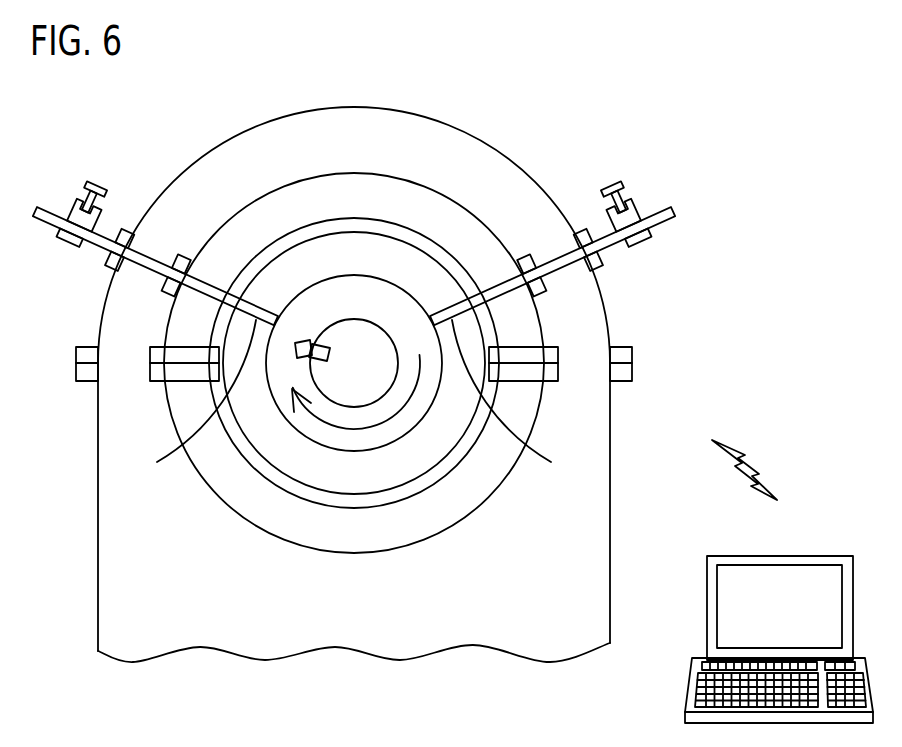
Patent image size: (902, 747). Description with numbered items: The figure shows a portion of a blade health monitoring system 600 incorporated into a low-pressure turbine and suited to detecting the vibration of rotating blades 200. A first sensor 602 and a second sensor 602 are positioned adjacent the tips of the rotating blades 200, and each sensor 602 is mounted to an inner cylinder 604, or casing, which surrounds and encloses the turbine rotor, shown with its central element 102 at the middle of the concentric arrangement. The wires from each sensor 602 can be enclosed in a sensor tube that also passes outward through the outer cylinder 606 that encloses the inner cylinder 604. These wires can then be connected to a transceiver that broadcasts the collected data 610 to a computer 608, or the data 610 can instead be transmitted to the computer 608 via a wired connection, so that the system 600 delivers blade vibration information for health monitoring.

The blade health monitoring system 600 is at (512, 108).
The outer cylinder 606 is at (345, 107).
The inner cylinder 604 is at (283, 538).
The shaft 102 is at (372, 405).
The sensor 602 is at (226, 302).
The blade 200 is at (355, 399).
The collected data 610 is at (795, 543).
The computer 608 is at (795, 618).